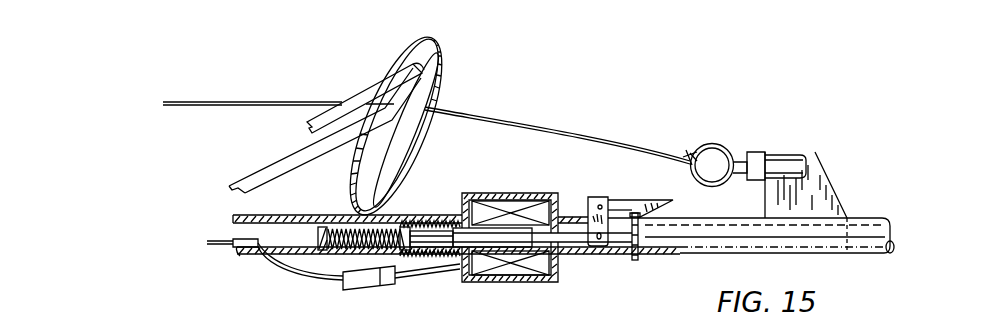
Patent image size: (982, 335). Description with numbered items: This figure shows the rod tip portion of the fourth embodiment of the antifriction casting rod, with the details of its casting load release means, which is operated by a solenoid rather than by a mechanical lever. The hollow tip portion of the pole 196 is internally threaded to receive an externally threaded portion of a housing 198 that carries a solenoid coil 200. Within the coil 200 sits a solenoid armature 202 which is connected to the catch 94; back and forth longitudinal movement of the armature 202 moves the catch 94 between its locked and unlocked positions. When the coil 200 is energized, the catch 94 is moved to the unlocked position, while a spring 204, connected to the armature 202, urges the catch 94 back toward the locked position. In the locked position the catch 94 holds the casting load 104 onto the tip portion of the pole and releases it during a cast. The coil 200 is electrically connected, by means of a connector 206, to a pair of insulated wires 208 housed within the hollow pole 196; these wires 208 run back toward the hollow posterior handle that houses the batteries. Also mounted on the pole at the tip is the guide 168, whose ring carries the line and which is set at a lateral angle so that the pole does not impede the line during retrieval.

The guide 168 is at (403, 63).
The spring 204 is at (340, 216).
The solenoid armature 202 is at (458, 226).
The housing 198 is at (500, 193).
The solenoid coil 200 is at (520, 268).
The catch 94 is at (625, 196).
The casting load 104 is at (850, 210).
The pole 196 is at (247, 256).
The insulated wires 208 is at (328, 283).
The connector 206 is at (362, 290).